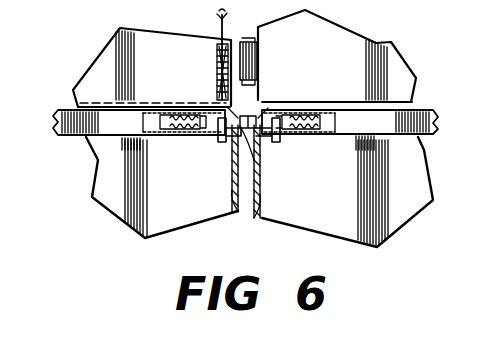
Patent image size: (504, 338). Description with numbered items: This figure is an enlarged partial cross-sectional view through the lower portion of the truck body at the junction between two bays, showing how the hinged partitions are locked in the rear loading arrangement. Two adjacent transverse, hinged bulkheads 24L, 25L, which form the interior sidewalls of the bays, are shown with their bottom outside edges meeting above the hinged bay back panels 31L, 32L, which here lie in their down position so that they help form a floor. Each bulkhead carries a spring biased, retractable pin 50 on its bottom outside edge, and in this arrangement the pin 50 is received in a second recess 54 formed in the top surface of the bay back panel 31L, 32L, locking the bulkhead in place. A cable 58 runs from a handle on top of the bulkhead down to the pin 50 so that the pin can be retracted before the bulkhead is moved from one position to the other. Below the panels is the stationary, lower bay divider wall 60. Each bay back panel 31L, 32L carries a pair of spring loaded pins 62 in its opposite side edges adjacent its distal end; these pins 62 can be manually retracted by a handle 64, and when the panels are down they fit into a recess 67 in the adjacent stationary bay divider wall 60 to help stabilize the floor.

The hinged bulkhead 24L is at (114, 53).
The hinged bulkhead 25L is at (341, 38).
The bay back panel 31L is at (70, 136).
The bay back panel 32L is at (421, 109).
The retractable pin 50 is at (210, 107).
The second recess 54 is at (172, 90).
The cable 58 is at (220, 27).
The stationary bay divider wall 60 is at (231, 194).
The spring loaded pin 62 is at (263, 105).
The handle 64 is at (217, 143).
The recess 67 is at (256, 142).